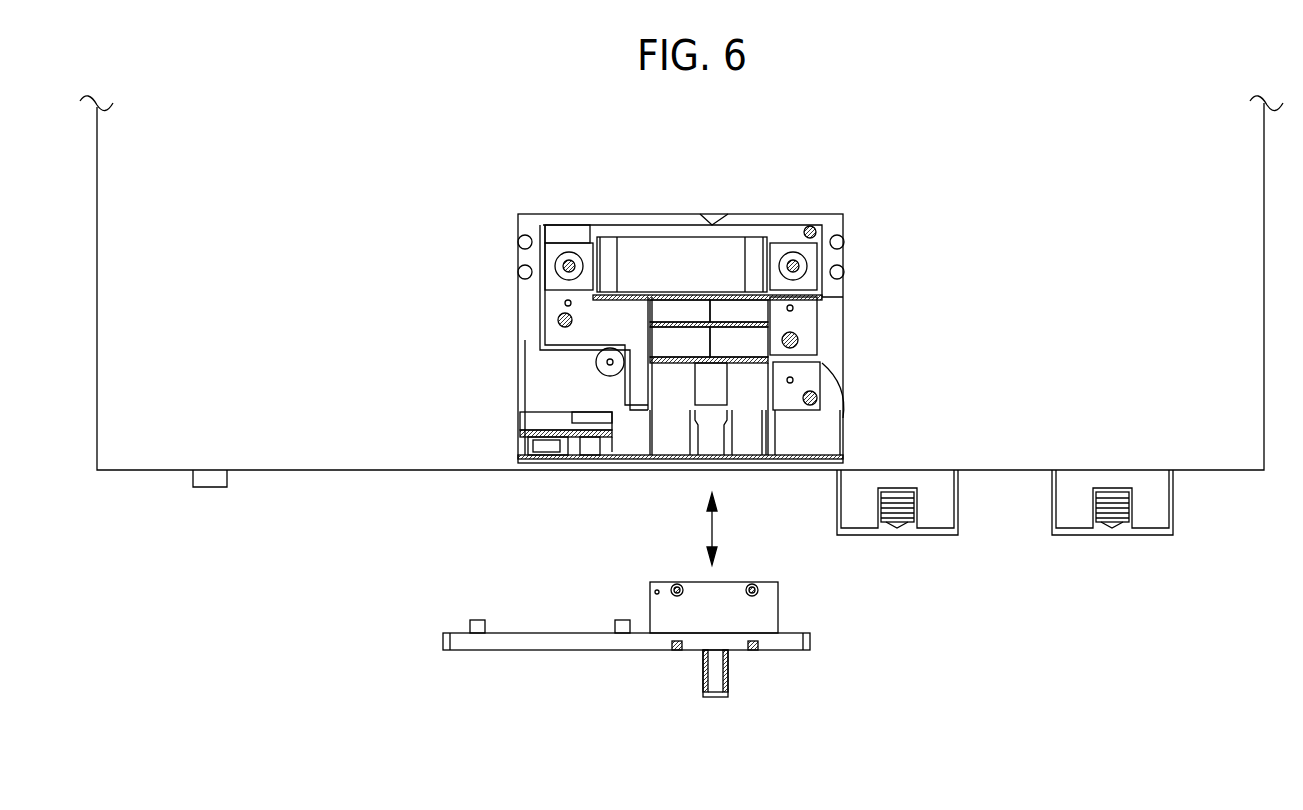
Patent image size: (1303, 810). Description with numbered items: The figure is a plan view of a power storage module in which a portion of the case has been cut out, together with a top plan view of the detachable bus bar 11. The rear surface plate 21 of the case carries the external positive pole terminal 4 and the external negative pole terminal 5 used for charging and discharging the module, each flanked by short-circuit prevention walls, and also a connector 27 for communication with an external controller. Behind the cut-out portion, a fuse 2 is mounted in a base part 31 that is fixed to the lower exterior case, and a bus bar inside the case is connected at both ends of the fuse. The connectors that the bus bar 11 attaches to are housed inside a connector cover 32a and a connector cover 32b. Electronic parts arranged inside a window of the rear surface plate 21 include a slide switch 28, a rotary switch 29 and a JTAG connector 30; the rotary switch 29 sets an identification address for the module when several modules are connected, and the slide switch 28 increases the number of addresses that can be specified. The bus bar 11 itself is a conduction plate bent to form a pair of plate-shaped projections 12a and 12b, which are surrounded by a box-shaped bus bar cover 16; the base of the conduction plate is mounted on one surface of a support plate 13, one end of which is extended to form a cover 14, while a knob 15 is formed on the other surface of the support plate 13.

The fuse 2 is at (713, 277).
The external positive pole terminal 4 is at (900, 524).
The external negative pole terminal 5 is at (1115, 524).
The bus bar 11 is at (692, 687).
The plate-shaped projection 12a is at (677, 597).
The plate-shaped projection 12b is at (752, 597).
The support plate 13 is at (770, 652).
The cover 14 is at (503, 652).
The knob 15 is at (706, 697).
The bus bar cover 16 is at (658, 592).
The rear surface plate 21 is at (295, 472).
The connector 27 is at (211, 487).
The slide switch 28 is at (588, 443).
The rotary switch 29 is at (557, 447).
The JTAG connector 30 is at (520, 456).
The base part 31 is at (525, 340).
The connector cover 32a is at (668, 442).
The connector cover 32b is at (755, 442).